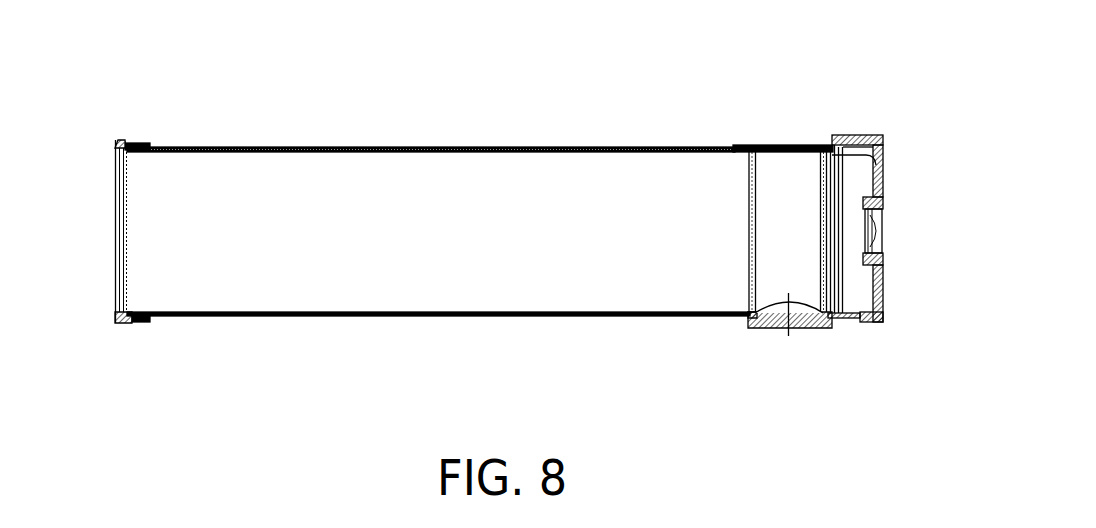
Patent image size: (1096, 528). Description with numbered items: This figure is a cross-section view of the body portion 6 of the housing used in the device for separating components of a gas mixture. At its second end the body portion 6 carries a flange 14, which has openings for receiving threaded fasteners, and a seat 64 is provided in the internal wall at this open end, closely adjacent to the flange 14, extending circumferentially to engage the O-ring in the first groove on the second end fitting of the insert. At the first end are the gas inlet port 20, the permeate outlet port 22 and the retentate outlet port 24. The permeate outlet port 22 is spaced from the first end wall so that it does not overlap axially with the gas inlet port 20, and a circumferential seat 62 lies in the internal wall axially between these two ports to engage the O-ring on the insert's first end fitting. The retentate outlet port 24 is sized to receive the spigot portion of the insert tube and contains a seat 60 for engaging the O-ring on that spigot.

The body portion 6 is at (463, 160).
The flange 14 is at (115, 140).
The seat 64 is at (127, 153).
The seat 62 is at (825, 160).
The permeate outlet port 22 is at (817, 327).
The gas inlet port 20 is at (858, 135).
The retentate outlet port 24 is at (883, 222).
The seat 60 is at (883, 240).